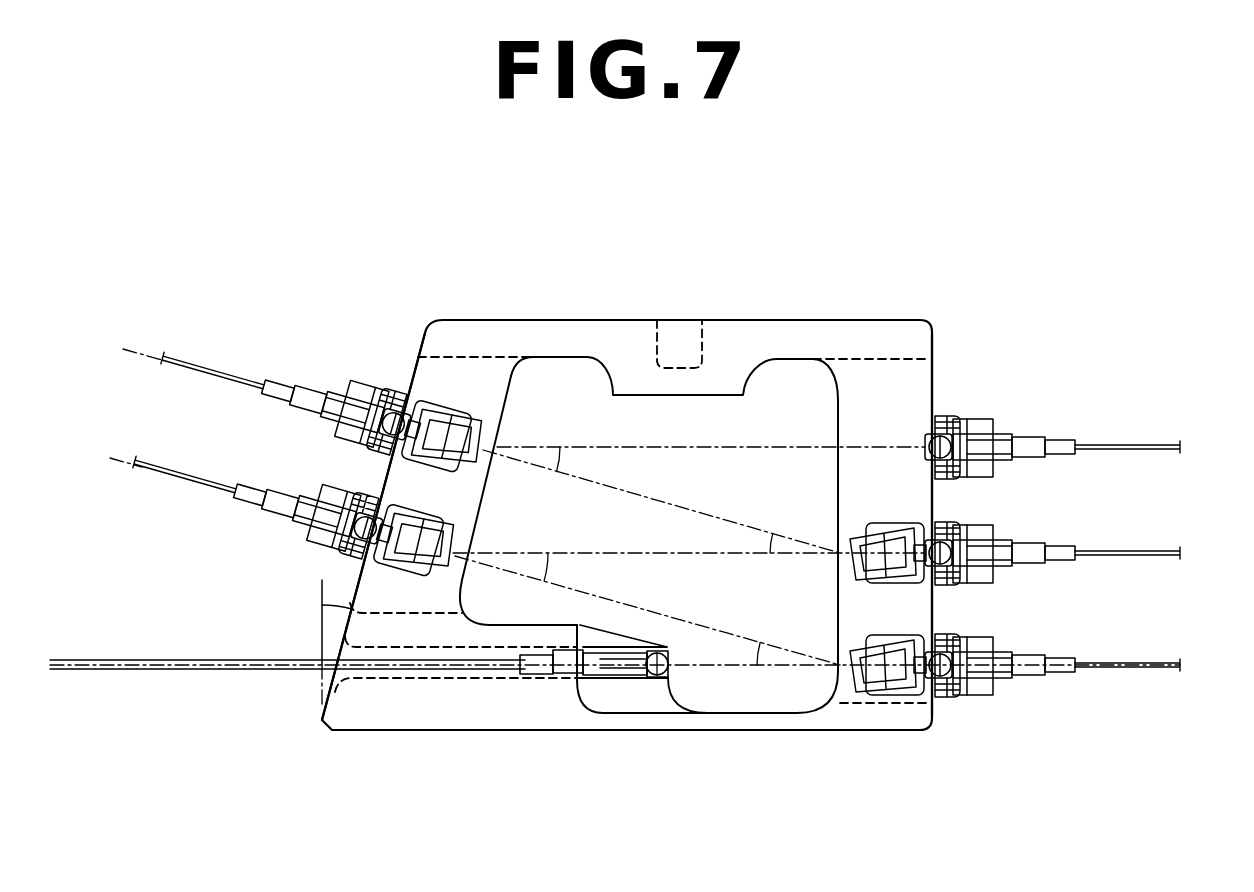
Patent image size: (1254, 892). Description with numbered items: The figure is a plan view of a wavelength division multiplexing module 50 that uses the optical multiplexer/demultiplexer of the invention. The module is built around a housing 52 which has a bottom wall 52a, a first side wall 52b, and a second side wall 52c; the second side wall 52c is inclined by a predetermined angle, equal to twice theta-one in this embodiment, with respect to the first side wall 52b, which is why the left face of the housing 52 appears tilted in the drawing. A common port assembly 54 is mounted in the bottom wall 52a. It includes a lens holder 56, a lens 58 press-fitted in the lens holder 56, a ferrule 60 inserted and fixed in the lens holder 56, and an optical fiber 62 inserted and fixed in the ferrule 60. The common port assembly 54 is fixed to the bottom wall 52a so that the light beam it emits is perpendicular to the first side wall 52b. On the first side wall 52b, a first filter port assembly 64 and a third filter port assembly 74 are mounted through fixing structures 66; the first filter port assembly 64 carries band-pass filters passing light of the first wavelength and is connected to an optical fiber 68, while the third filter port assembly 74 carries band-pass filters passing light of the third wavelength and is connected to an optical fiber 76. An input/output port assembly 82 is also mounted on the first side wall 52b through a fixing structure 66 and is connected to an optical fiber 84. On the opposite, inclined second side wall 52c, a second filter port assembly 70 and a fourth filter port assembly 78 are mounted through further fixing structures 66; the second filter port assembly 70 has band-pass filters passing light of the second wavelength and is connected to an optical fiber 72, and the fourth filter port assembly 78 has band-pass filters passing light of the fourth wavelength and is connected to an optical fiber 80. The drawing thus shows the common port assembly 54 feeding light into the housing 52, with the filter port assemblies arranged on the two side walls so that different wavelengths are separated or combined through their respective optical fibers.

The wavelength division multiplexing module 50 is at (752, 318).
The housing 52 is at (612, 332).
The bottom wall 52a is at (755, 715).
The first side wall 52b is at (935, 366).
The second side wall 52c is at (418, 362).
The common port assembly 54 is at (625, 684).
The lens holder 56 is at (583, 682).
The lens 58 is at (657, 676).
The ferrule 60 is at (600, 680).
The optical fiber 62 is at (160, 670).
The first filter port assembly 64 is at (1015, 688).
The fixing structure 66 is at (965, 415).
The optical fiber 68 is at (1152, 676).
The second filter port assembly 70 is at (290, 490).
The optical fiber 72 is at (158, 470).
The third filter port assembly 74 is at (1013, 530).
The optical fiber 76 is at (1173, 550).
The fourth filter port assembly 78 is at (308, 378).
The optical fiber 80 is at (180, 360).
The input/output port assembly 82 is at (1022, 433).
The optical fiber 84 is at (1138, 445).